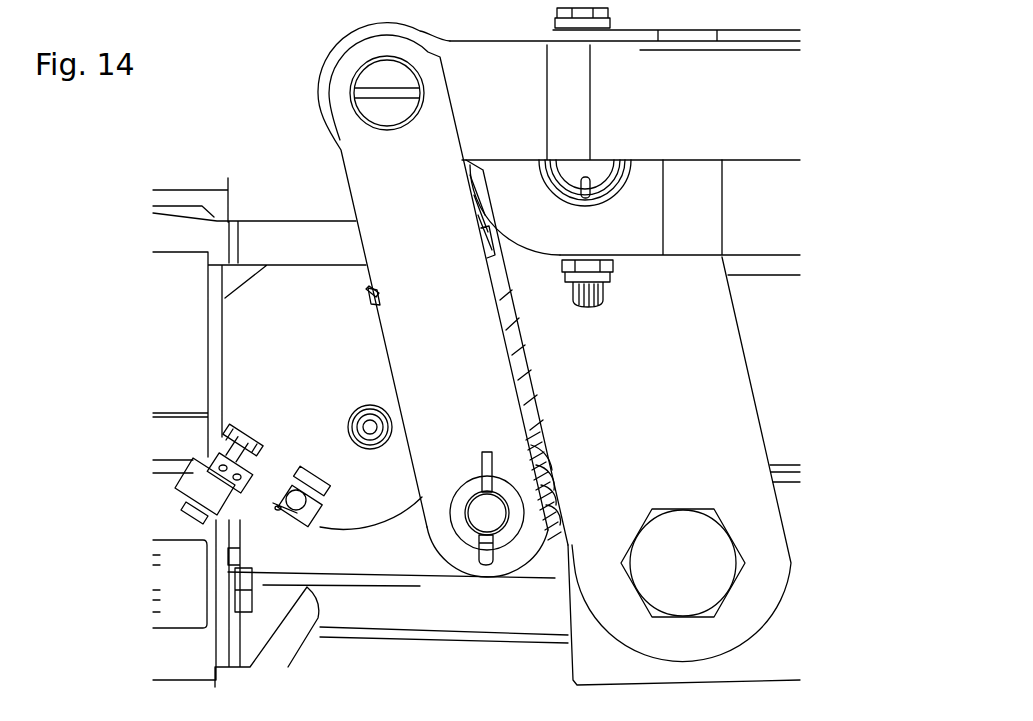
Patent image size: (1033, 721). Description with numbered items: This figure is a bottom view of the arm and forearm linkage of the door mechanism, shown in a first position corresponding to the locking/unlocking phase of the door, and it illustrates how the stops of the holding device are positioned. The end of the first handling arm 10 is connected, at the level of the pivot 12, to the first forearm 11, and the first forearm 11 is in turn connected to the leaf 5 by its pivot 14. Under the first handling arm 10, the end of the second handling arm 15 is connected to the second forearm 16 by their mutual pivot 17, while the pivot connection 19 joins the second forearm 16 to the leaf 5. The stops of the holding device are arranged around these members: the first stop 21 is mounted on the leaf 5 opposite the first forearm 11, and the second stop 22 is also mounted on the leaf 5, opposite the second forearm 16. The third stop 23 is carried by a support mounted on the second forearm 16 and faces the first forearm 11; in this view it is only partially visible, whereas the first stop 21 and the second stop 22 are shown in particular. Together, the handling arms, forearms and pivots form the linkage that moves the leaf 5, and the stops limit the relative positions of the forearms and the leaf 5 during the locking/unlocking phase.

The leaf 5 is at (398, 603).
The first handling arm 10 is at (777, 238).
The first forearm 11 is at (700, 339).
The pivot 12 is at (597, 190).
The pivot 14 is at (688, 570).
The second handling arm 15 is at (642, 62).
The second forearm 16 is at (367, 193).
The mutual pivot 17 is at (408, 103).
The pivot connection 19 is at (493, 560).
The first stop 21 is at (322, 480).
The second stop 22 is at (247, 430).
The third stop 23 is at (367, 292).